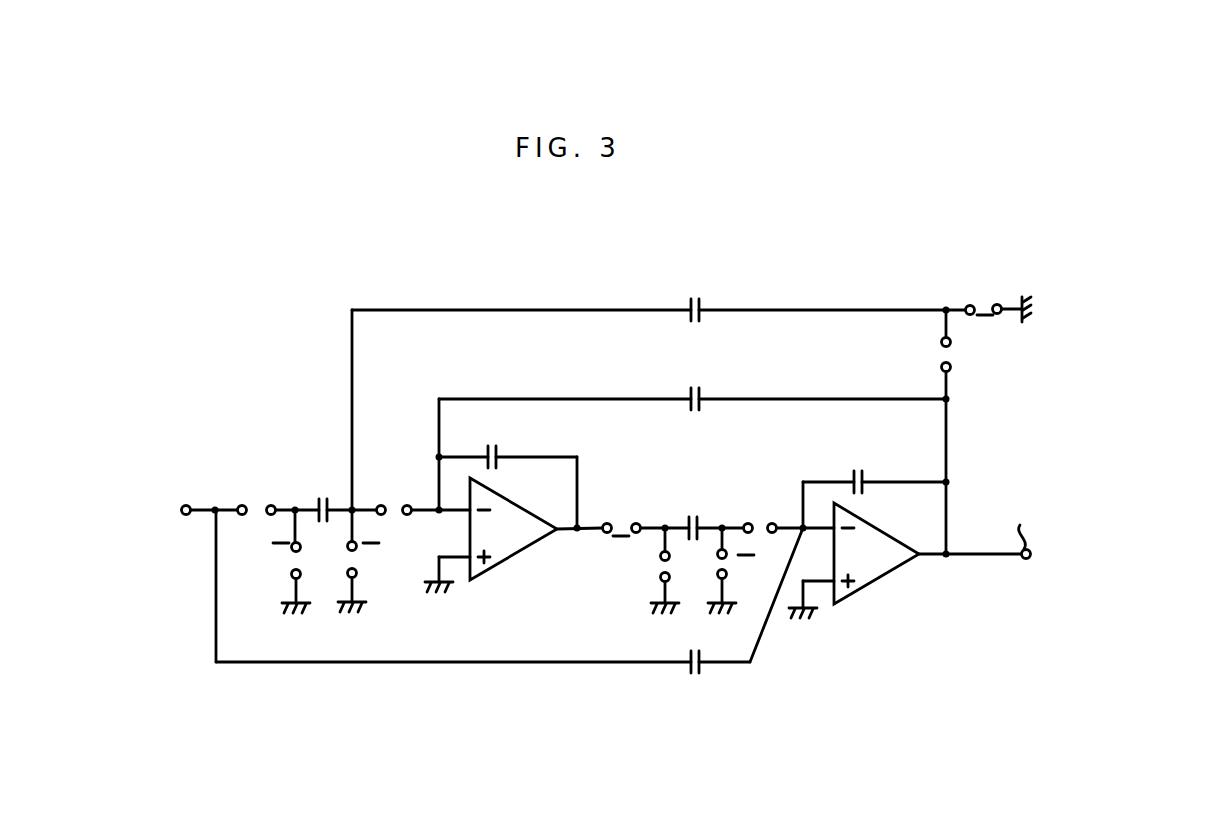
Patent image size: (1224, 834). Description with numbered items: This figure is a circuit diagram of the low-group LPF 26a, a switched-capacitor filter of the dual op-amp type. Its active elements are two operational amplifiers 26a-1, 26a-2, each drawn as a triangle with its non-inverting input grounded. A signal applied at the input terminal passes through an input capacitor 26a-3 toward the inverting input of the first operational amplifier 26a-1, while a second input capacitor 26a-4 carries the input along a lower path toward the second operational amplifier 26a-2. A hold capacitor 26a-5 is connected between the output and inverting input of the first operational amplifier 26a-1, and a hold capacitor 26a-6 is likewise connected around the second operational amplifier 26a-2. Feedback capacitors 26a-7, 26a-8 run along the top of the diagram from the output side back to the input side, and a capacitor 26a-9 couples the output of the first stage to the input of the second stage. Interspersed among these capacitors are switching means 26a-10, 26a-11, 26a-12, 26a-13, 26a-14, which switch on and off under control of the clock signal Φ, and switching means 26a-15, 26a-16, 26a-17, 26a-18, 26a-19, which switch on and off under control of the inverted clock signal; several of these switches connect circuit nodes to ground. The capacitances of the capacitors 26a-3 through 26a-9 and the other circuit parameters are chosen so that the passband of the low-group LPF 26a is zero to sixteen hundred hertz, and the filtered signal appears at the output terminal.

The low-group LPF 26a is at (918, 221).
The operational amplifier 26a-1 is at (537, 517).
The operational amplifier 26a-2 is at (889, 535).
The input capacitor 26a-3 is at (323, 497).
The input capacitor 26a-4 is at (700, 667).
The hold capacitor 26a-5 is at (497, 455).
The hold capacitor 26a-6 is at (858, 470).
The feedback capacitor 26a-7 is at (700, 306).
The feedback capacitor 26a-8 is at (699, 395).
The capacitor 26a-9 is at (693, 515).
The switching means 26a-10 is at (242, 505).
The switching means 26a-11 is at (381, 505).
The switching means 26a-12 is at (661, 578).
The switching means 26a-13 is at (748, 523).
The switching means 26a-14 is at (950, 371).
The switching means 26a-15 is at (292, 577).
The switching means 26a-16 is at (356, 578).
The switching means 26a-17 is at (607, 523).
The switching means 26a-18 is at (727, 578).
The switching means 26a-19 is at (998, 304).